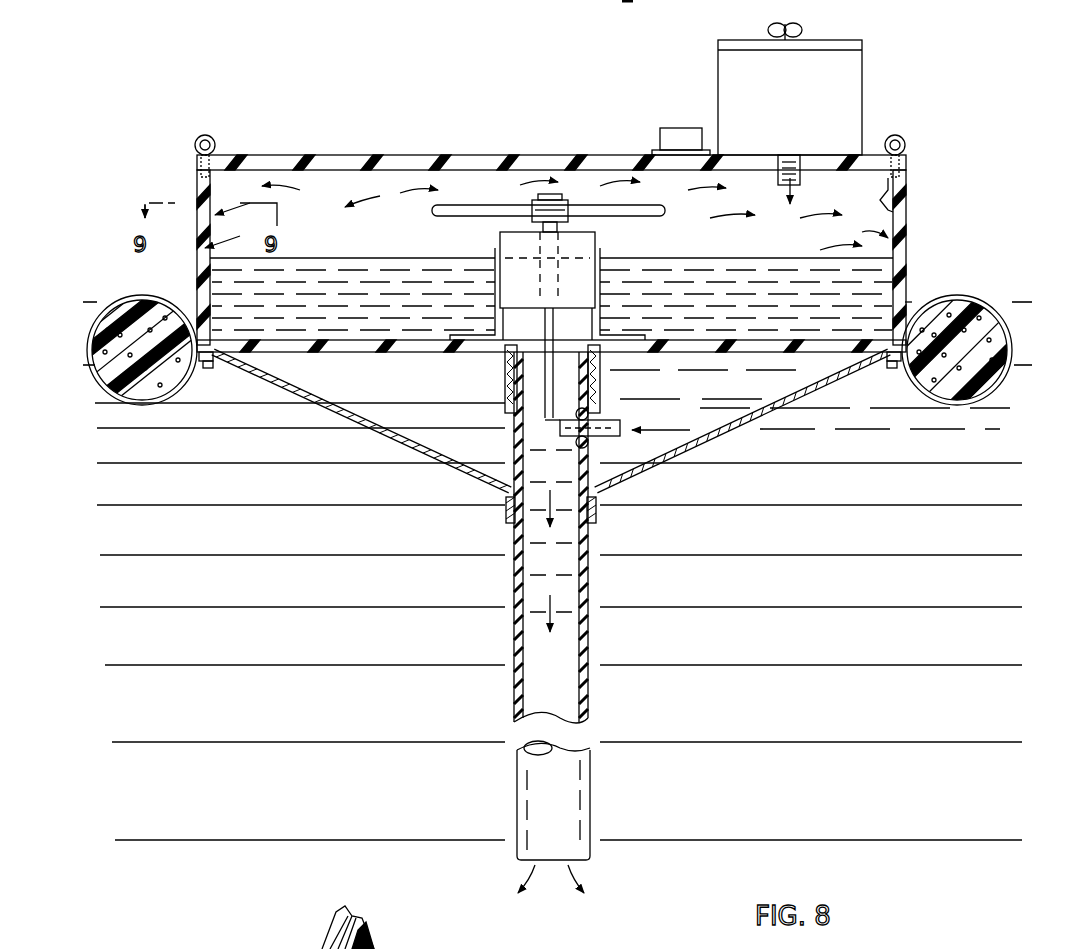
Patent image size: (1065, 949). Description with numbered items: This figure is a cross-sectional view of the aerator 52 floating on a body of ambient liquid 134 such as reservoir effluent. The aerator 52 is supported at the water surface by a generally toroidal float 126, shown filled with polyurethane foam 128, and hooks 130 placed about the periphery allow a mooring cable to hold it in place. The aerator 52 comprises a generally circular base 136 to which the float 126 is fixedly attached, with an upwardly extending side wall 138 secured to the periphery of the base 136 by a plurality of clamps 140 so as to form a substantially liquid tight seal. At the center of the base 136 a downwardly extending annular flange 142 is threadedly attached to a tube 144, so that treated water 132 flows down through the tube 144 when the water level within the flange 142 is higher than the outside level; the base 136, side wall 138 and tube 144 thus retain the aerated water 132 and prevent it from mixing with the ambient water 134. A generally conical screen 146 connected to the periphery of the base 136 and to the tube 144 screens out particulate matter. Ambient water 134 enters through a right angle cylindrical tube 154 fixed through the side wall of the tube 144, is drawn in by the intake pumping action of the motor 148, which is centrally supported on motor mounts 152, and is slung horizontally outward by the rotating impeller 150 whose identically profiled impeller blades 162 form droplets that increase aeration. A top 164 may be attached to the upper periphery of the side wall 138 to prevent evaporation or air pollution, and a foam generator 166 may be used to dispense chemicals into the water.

The aerator 52 is at (365, 152).
The float 126 is at (942, 300).
The polyurethane foam 128 is at (970, 310).
The hooks 130 is at (212, 140).
The treated water 132 is at (352, 258).
The ambient liquid 134 is at (352, 548).
The base 136 is at (340, 353).
The side wall 138 is at (900, 196).
The clamps 140 is at (214, 366).
The annular flange 142 is at (507, 380).
The tube 144 is at (514, 582).
The conical screen 146 is at (378, 432).
The motor 148 is at (502, 236).
The rotating impeller 150 is at (435, 205).
The motor mounts 152 is at (495, 252).
The right angle cylindrical tube 154 is at (608, 420).
The impeller blades 162 is at (497, 204).
The top 164 is at (596, 166).
The foam generator 166 is at (718, 76).